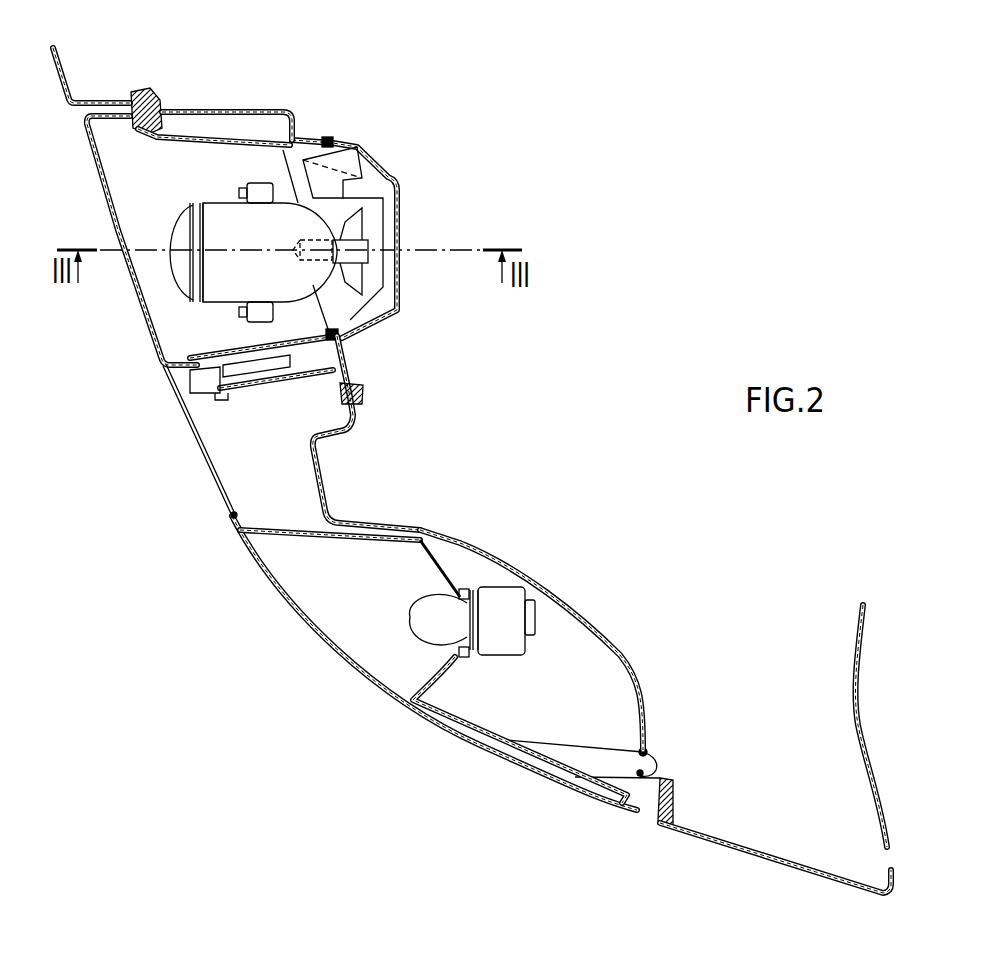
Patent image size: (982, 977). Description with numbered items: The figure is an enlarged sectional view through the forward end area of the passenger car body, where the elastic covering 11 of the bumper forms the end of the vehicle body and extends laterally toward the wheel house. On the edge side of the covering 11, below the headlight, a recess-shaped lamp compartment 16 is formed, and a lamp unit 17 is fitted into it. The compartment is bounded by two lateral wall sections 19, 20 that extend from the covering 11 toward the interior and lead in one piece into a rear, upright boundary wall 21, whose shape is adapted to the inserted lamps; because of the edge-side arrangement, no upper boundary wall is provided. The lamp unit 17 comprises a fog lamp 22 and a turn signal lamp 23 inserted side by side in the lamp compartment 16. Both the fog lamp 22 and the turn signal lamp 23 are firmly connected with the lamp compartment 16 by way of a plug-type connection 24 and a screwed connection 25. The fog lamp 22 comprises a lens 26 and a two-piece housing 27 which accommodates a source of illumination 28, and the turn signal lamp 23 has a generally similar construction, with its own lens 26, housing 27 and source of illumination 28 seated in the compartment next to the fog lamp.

The elastic covering 11 is at (789, 873).
The lamp compartment 16 is at (72, 114).
The lamp unit 17 is at (165, 421).
The lateral wall section 19 is at (203, 110).
The lateral wall section 20 is at (677, 800).
The rear boundary wall 21 is at (485, 536).
The fog lamp 22 is at (156, 258).
The turn signal lamp 23 is at (348, 602).
The plug-type connection 24 is at (160, 98).
The screwed connection 25 is at (368, 378).
The lens 26 is at (143, 327).
The housing 27 is at (237, 137).
The source of illumination 28 is at (223, 222).